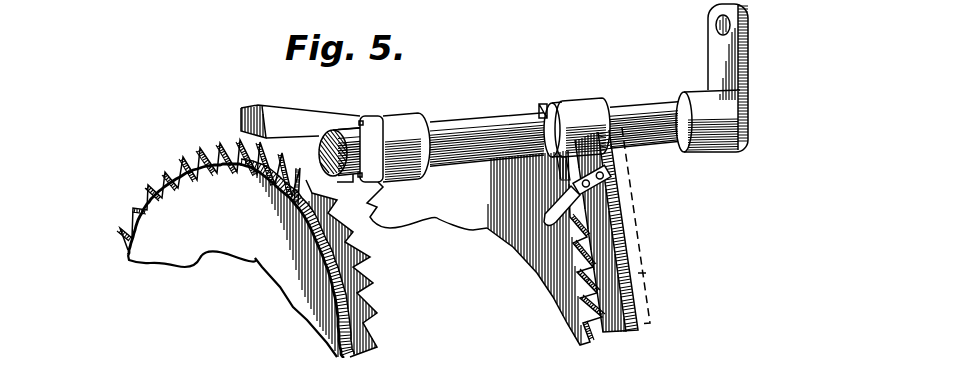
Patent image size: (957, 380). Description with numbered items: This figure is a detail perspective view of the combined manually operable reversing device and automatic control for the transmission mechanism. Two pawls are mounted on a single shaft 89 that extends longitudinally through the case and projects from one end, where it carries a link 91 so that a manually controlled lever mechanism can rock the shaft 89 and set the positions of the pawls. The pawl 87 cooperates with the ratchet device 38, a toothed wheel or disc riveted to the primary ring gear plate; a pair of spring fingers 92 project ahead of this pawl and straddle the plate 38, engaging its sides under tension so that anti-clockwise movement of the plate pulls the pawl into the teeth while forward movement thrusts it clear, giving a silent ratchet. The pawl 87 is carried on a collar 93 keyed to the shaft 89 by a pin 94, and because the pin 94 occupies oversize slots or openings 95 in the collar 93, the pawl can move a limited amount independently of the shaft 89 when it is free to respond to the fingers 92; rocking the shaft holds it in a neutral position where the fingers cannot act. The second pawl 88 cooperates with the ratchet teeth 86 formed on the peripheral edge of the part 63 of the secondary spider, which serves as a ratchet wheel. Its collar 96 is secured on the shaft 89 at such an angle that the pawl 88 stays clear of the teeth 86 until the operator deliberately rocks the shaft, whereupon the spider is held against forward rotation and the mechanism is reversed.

The ratchet device 38 is at (567, 282).
The part of the secondary spider 63 is at (330, 332).
The ratchet teeth 86 is at (363, 275).
The pawl 87 is at (610, 210).
The pawl 88 is at (317, 122).
The shaft 89 is at (480, 127).
The link 91 is at (713, 43).
The fingers 92 is at (575, 205).
The collar 93 is at (583, 108).
The pin 94 is at (542, 112).
The slots or openings 95 is at (549, 104).
The collar 96 is at (403, 127).